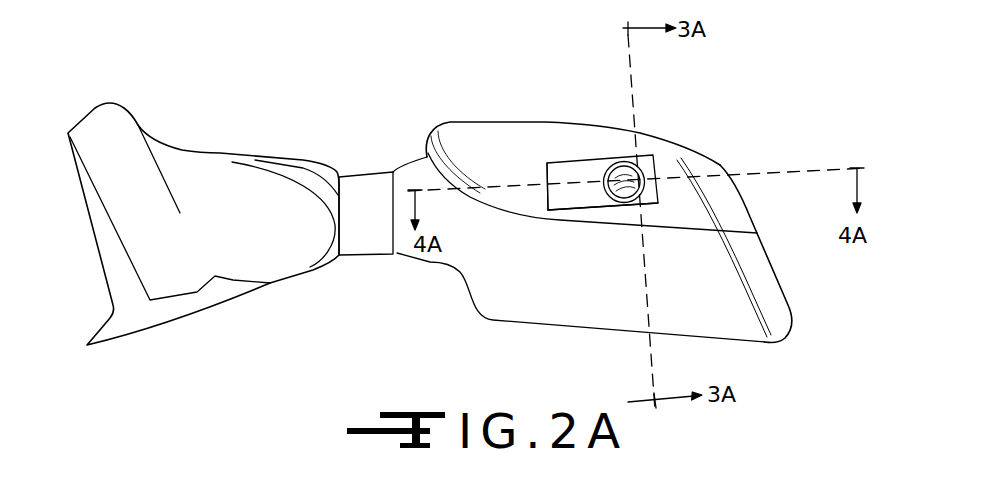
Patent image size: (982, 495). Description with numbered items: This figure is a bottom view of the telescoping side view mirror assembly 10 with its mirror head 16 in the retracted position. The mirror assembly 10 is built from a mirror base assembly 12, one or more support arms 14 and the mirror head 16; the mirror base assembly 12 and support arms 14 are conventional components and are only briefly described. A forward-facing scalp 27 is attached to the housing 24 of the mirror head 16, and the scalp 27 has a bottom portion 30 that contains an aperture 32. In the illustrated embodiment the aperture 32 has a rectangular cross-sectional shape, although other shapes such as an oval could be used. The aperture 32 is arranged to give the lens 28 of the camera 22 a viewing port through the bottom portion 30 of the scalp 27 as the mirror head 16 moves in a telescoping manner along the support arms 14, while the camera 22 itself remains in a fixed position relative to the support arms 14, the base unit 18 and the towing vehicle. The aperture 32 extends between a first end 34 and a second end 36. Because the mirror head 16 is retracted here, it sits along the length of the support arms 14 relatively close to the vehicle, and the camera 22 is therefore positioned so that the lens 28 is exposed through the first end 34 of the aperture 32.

The mirror assembly 10 is at (472, 219).
The mirror base assembly 12 is at (190, 317).
The support arms 14 is at (361, 257).
The mirror head 16 is at (796, 301).
The base unit 18 is at (203, 147).
The camera 22 is at (604, 180).
The housing 24 is at (783, 283).
The scalp 27 is at (601, 122).
The lens 28 is at (657, 155).
The bottom portion 30 is at (690, 217).
The aperture 32 is at (660, 170).
The first end 34 is at (648, 203).
The second end 36 is at (563, 210).